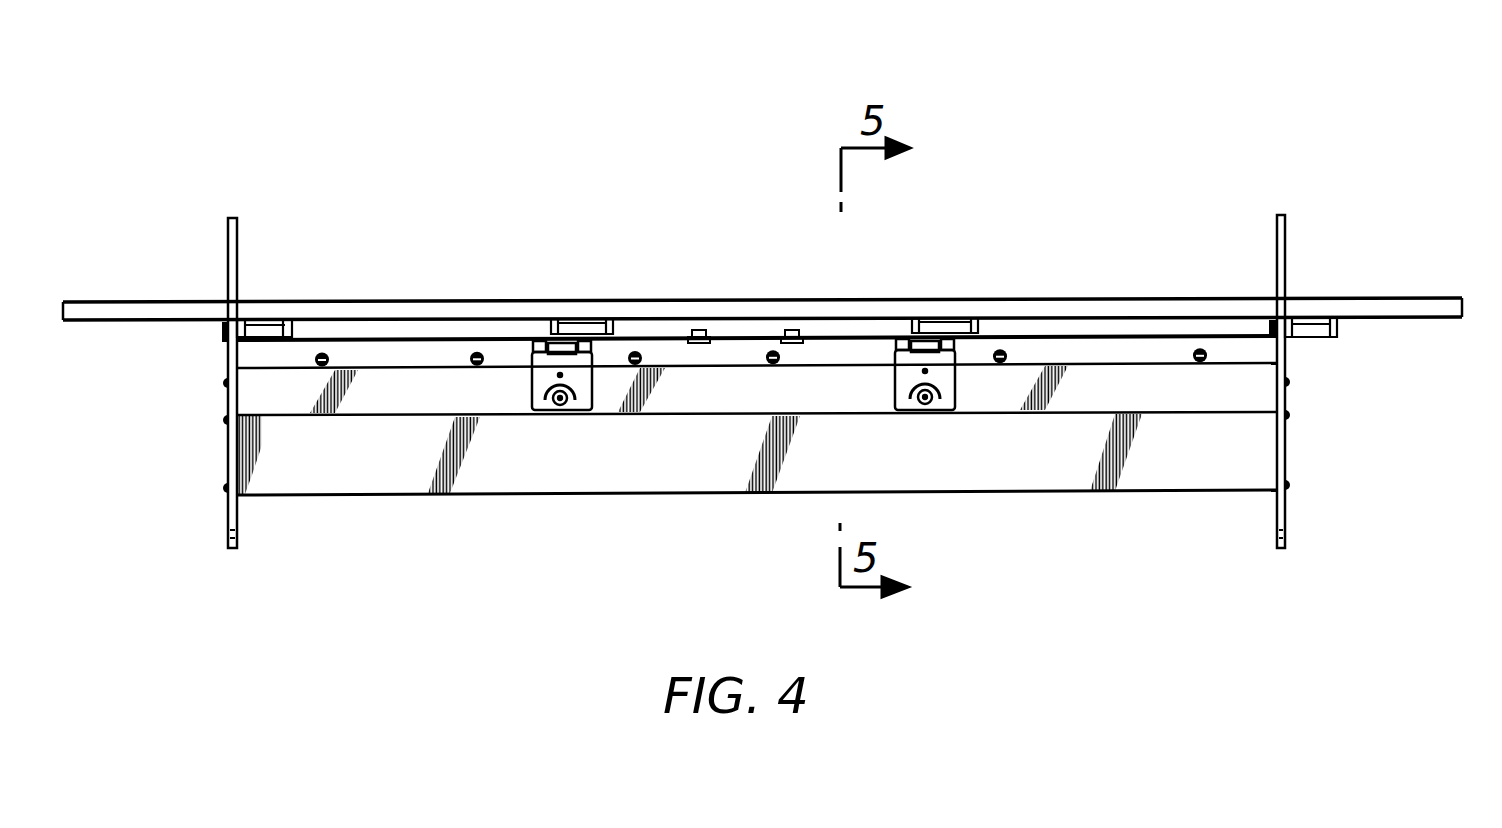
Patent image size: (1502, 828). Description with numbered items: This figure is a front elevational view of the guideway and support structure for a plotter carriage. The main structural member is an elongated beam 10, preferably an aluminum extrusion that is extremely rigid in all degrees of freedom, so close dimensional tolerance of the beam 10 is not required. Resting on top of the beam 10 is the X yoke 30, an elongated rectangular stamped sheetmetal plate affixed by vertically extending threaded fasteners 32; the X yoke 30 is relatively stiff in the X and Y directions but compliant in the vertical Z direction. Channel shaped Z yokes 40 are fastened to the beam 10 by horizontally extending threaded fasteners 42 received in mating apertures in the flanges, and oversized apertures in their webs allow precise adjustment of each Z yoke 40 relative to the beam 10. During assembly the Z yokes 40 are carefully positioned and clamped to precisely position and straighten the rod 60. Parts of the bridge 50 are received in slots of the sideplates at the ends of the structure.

The elongated beam 10 is at (405, 143).
The X yoke 30 is at (1097, 337).
The threaded fasteners 32 is at (700, 330).
The Z yoke 40 is at (531, 378).
The threaded fasteners 42 is at (557, 412).
The bridge 50 is at (285, 328).
The rod 60 is at (1368, 298).